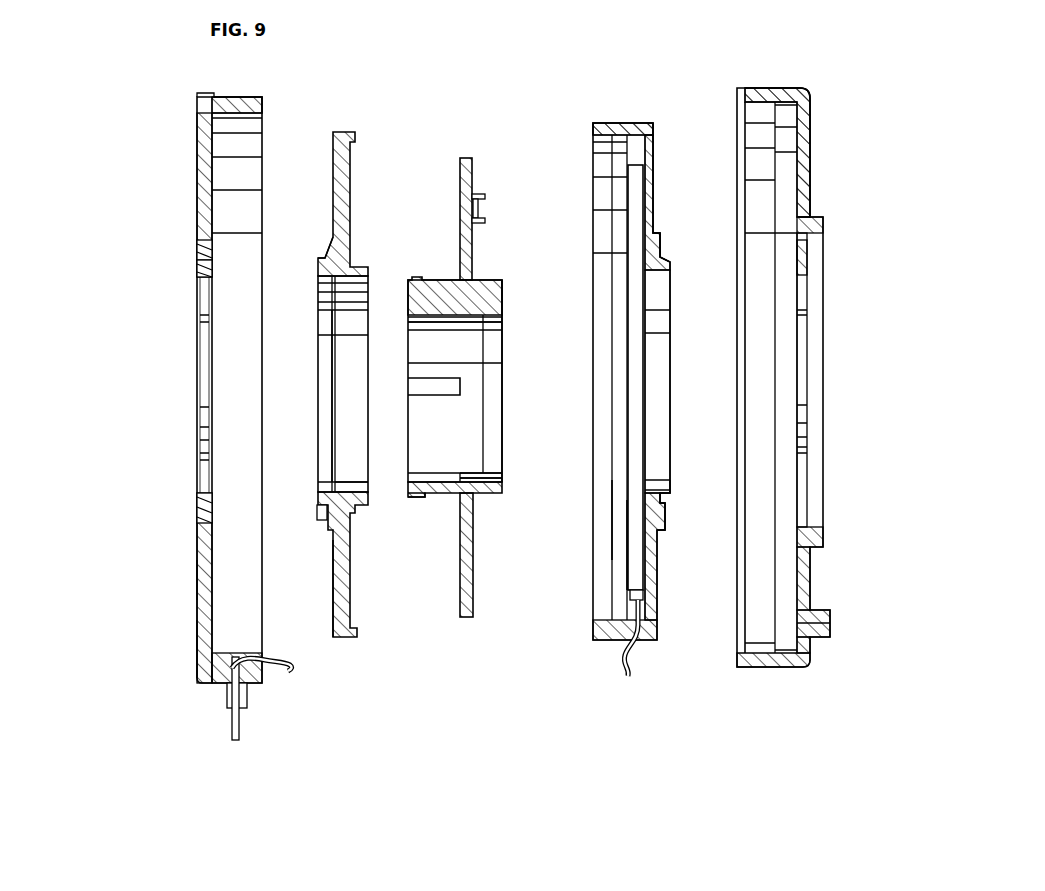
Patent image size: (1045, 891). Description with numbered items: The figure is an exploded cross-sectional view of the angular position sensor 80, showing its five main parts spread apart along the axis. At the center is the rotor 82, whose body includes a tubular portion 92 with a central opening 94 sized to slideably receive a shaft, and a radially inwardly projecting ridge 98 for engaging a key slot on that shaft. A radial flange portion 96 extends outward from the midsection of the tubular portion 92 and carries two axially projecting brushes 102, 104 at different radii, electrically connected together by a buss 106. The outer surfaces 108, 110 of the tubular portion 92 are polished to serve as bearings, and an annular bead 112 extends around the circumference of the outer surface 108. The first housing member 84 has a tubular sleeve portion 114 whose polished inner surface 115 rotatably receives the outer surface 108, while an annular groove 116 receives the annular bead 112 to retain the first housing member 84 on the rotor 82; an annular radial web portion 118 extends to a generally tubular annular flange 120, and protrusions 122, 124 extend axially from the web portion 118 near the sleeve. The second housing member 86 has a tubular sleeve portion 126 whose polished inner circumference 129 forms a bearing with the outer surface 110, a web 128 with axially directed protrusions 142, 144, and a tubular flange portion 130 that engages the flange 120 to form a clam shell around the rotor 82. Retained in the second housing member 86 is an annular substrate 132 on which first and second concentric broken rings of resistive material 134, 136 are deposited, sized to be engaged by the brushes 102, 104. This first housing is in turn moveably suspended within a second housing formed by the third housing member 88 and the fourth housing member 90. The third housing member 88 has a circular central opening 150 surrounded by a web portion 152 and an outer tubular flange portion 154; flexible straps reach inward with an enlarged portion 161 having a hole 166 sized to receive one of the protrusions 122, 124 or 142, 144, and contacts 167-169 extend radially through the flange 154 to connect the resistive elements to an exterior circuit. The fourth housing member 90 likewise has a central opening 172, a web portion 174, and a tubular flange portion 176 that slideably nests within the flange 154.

The angular position sensor 80 is at (120, 140).
The tubular flange portion 154 is at (250, 92).
The enlarged portion 161 is at (203, 245).
The hole 166 is at (203, 265).
The central opening 150 is at (203, 520).
The web portion 152 is at (203, 580).
The third housing member 88 is at (185, 633).
The contacts 167-169 is at (230, 725).
The first housing member 84 is at (325, 146).
The annular flange 120 is at (352, 131).
The axially extending protrusion 122 is at (323, 258).
The annular groove 116 is at (332, 390).
The inner surface 115 is at (354, 482).
The tubular sleeve portion 114 is at (357, 507).
The axially extending protrusion 124 is at (318, 512).
The annular radial web portion 118 is at (333, 578).
The rotor 82 is at (486, 570).
The radial flange portion 96 is at (461, 210).
The brush 102 is at (486, 195).
The buss 106 is at (480, 207).
The brush 104 is at (486, 222).
The outer surface 108 is at (446, 280).
The outer surface 110 is at (495, 278).
The radially inwardly projecting ridge 98 is at (486, 322).
The central opening 94 is at (484, 478).
The tubular portion 92 is at (442, 495).
The annular bead 112 is at (418, 497).
The second housing member 86 is at (637, 110).
The tubular flange portion 130 is at (604, 122).
The web 128 is at (662, 200).
The axially directed protrusion 142 is at (670, 250).
The inner circumference 129 is at (652, 273).
The tubular sleeve portion 126 is at (672, 490).
The axially directed protrusion 144 is at (676, 503).
The first broken ring of resistive material 134 is at (627, 518).
The annular substrate 132 is at (627, 548).
The second broken ring of resistive material 136 is at (622, 572).
The fourth housing member 90 is at (830, 190).
The tubular flange portion 176 is at (770, 88).
The central opening 172 is at (814, 527).
The web portion 174 is at (814, 580).